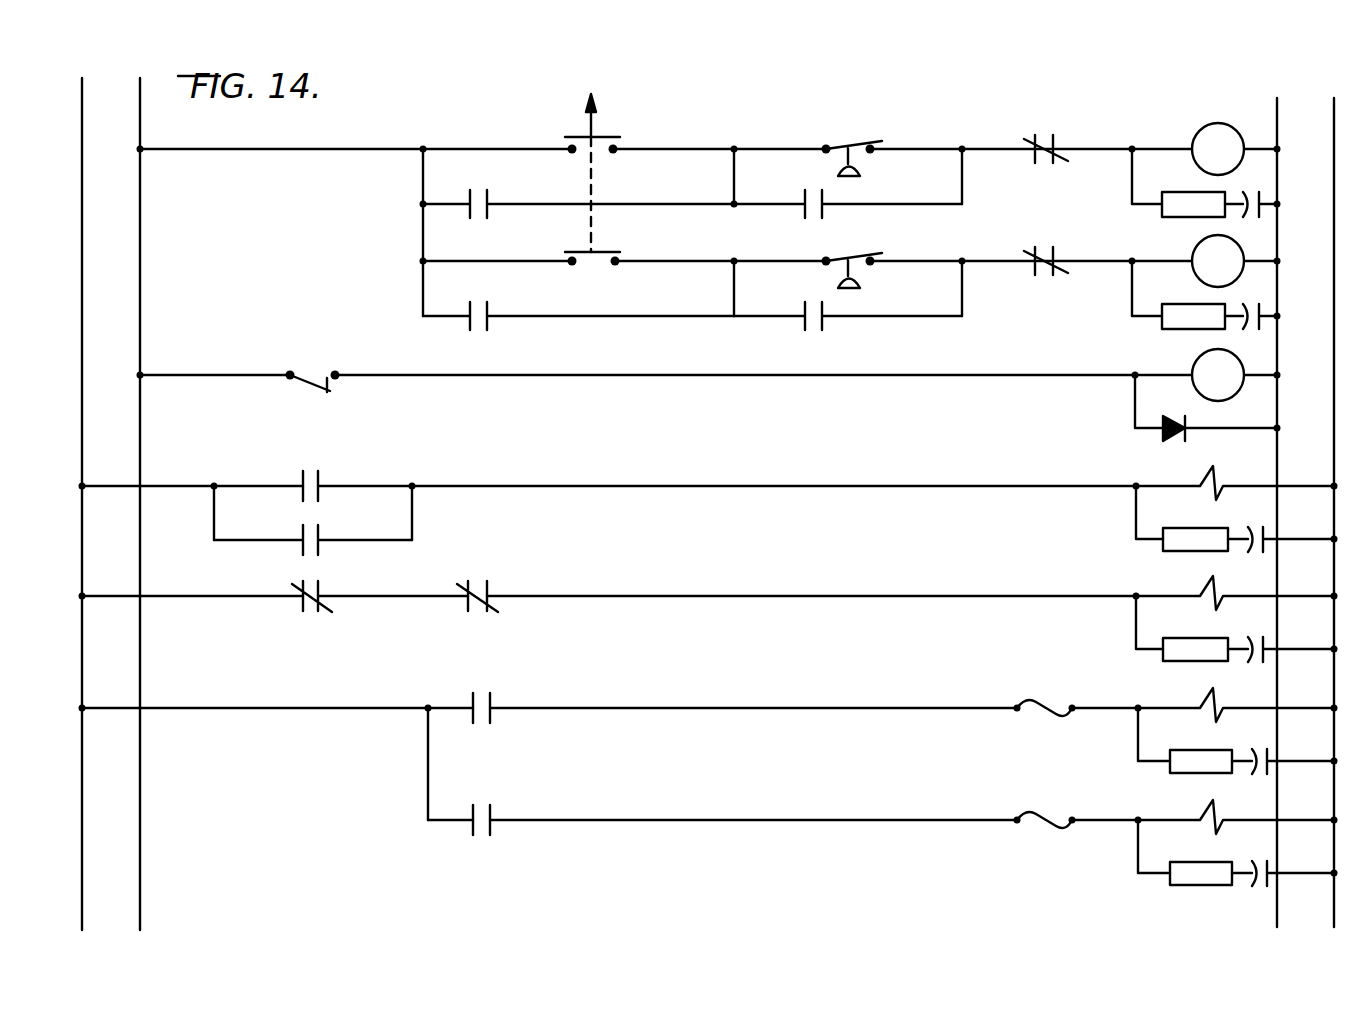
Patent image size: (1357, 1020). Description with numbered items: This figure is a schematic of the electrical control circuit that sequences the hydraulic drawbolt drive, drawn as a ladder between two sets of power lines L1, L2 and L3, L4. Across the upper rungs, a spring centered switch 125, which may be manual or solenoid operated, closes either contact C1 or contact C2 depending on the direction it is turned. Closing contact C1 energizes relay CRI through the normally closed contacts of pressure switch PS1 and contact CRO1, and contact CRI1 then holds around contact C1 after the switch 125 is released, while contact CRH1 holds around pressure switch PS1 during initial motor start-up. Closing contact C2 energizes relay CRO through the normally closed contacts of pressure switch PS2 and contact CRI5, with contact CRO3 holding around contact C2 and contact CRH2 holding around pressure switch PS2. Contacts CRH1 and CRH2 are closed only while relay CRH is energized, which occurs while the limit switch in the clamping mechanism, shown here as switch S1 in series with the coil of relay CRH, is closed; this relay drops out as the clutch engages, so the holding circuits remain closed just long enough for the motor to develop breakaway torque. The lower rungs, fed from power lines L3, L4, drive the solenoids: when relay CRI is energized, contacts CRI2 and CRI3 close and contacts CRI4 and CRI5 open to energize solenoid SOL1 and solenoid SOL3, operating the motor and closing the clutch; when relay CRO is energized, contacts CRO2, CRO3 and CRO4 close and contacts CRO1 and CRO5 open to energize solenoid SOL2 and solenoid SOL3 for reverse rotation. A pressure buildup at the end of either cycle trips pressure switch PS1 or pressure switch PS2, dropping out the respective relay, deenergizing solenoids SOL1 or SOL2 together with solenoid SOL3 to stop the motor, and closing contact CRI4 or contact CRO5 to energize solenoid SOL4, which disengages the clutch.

The spring centered switch 125 is at (593, 122).
The contact C2 is at (598, 153).
The contact C1 is at (600, 265).
The switch S1 is at (298, 373).
The power line L1 is at (135, 493).
The power line L2 is at (1271, 500).
The power line L3 is at (77, 493).
The power line L4 is at (1328, 500).
The relay CRO is at (1204, 156).
The relay CRI is at (1204, 281).
The relay CRH is at (1205, 395).
The contact CRO1 is at (1036, 248).
The contact CRO2 is at (466, 693).
The contact CRO3 is at (578, 191).
The contact CRO4 is at (313, 532).
The contact CRO5 is at (297, 588).
The contact CRI1 is at (578, 304).
The contact CRI2 is at (294, 474).
The contact CRI3 is at (466, 806).
The contact CRI4 is at (469, 583).
The contact CRI5 is at (1038, 135).
The contact CRH1 is at (848, 306).
The contact CRH2 is at (848, 193).
The pressure switch PS1 is at (852, 255).
The pressure switch PS2 is at (852, 141).
The solenoid SOL1 is at (1236, 843).
The solenoid SOL2 is at (1236, 731).
The solenoid SOL3 is at (1235, 509).
The solenoid SOL4 is at (1235, 619).